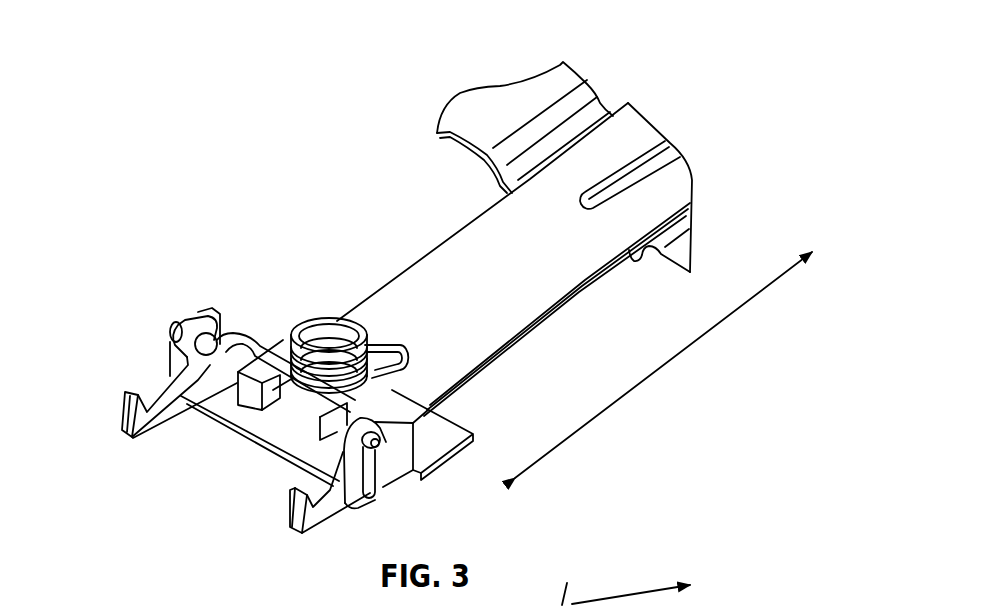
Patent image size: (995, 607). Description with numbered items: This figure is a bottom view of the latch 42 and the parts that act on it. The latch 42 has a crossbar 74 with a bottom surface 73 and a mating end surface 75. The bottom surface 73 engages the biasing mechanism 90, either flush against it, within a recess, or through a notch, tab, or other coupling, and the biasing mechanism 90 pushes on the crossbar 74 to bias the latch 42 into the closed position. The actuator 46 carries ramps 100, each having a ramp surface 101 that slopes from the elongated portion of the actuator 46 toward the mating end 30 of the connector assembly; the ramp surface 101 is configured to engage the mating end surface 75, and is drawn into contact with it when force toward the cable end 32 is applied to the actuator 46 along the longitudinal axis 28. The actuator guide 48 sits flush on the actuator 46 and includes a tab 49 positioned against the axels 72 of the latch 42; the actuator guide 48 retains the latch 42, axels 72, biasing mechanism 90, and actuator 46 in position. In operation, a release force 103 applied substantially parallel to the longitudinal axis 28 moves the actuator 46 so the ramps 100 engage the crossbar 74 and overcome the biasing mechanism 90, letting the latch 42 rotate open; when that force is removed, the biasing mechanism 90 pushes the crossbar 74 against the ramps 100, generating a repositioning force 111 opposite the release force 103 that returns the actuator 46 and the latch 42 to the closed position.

The longitudinal axis 28 is at (748, 303).
The mating end 30 is at (77, 345).
The cable end 32 is at (708, 85).
The latch 42 is at (232, 324).
The actuator 46 is at (462, 222).
The actuator guide 48 is at (563, 79).
The tab 49 is at (380, 477).
The axels 72 is at (380, 448).
The bottom surface 73 is at (277, 362).
The crossbar 74 is at (253, 348).
The mating end surface 75 is at (273, 430).
The biasing mechanism 90 is at (337, 318).
The ramps 100 is at (250, 393).
The ramp surface 101 is at (197, 400).
The release force 103 is at (650, 592).
The repositioning force 111 is at (566, 578).